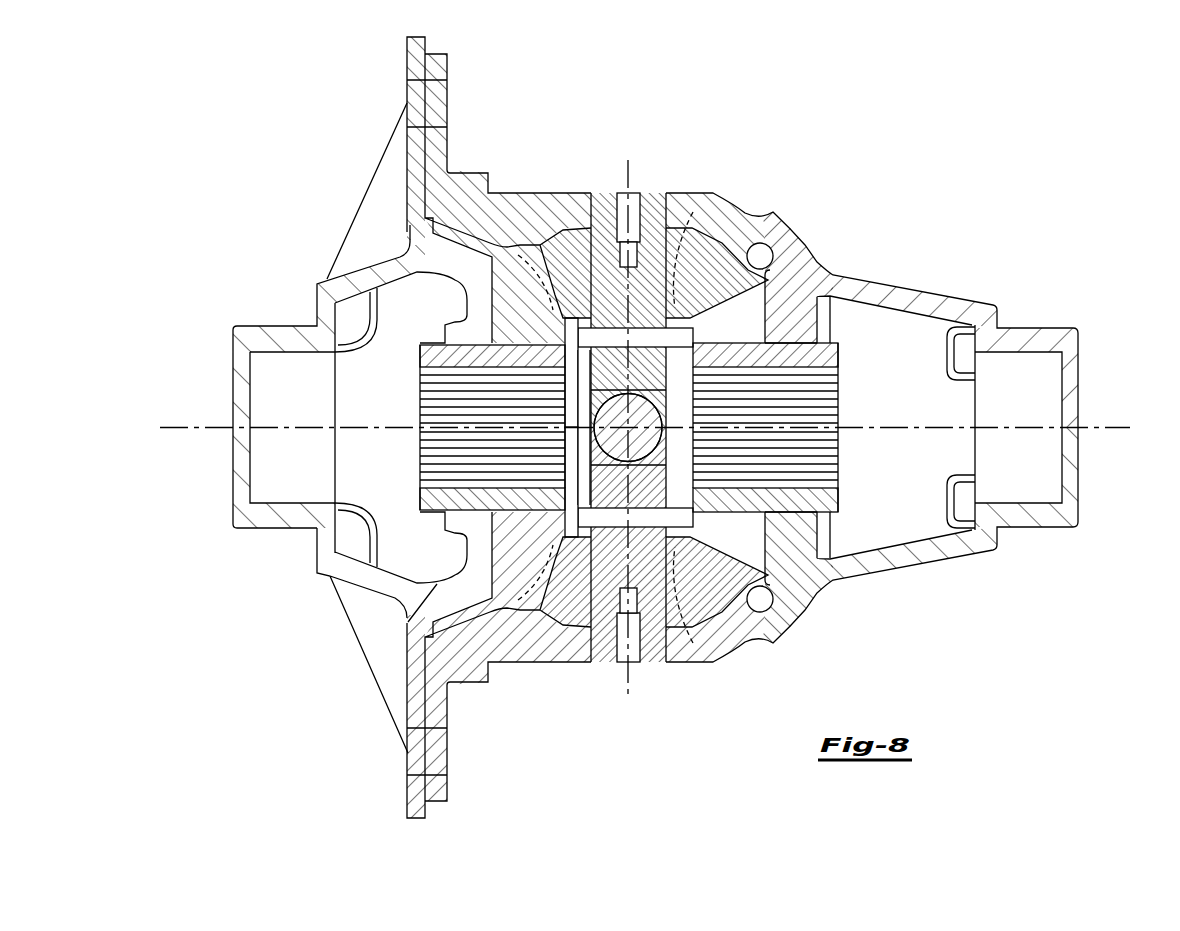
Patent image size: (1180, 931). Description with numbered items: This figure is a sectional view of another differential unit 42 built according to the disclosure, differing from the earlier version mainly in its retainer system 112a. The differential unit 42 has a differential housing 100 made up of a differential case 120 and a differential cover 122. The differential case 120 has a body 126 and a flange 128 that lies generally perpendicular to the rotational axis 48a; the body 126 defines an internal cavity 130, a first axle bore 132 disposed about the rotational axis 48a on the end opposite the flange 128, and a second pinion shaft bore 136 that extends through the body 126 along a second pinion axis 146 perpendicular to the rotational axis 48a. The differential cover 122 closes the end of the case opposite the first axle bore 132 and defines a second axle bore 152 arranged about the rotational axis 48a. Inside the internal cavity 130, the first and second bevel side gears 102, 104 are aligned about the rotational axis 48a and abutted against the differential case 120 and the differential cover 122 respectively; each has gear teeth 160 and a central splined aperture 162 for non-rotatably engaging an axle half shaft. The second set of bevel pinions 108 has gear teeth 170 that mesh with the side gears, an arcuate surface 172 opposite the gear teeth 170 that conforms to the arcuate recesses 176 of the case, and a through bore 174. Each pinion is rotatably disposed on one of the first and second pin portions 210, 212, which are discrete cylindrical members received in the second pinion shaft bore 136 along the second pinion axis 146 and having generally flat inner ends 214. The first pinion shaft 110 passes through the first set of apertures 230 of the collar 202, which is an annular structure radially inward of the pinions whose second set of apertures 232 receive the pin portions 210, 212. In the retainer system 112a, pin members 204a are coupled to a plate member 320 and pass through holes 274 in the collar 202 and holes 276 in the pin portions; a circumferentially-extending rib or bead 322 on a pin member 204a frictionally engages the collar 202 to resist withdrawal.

The differential unit 42 is at (358, 133).
The differential cover 122 is at (365, 217).
The flange 128 is at (438, 147).
The differential housing 100 is at (470, 162).
The body 126 is at (540, 197).
The gear teeth 160 is at (518, 255).
The through bore 174 is at (562, 230).
The second pin portion 212 is at (592, 200).
The second pinion axis 146 is at (629, 182).
The second pinion shaft bore 136 is at (677, 207).
The surface 172 is at (696, 230).
The holes 274 is at (735, 228).
The gear teeth 170 is at (765, 243).
The differential case 120 is at (782, 241).
The first bevel side gear 102 is at (745, 310).
The pin members 204a is at (833, 277).
The holes 276 is at (606, 323).
The collar 202 is at (580, 356).
The inner ends 214 is at (672, 392).
The first set of apertures 230 is at (800, 356).
The central splined aperture 162 is at (817, 400).
The first pinion shaft 110 is at (645, 415).
The second axle bore 152 is at (262, 398).
The first axle bore 132 is at (1040, 398).
The rotational axis 48a is at (1122, 429).
The plate member 320 is at (520, 523).
The second bevel side gear 104 is at (515, 568).
The rib or bead 322 is at (692, 505).
The second set of apertures 232 is at (570, 513).
The internal cavity 130 is at (737, 582).
The second set of bevel pinions 108 is at (688, 613).
The first pin portion 210 is at (658, 652).
The arcuate recesses 176 is at (570, 615).
The retainer system 112a is at (609, 684).